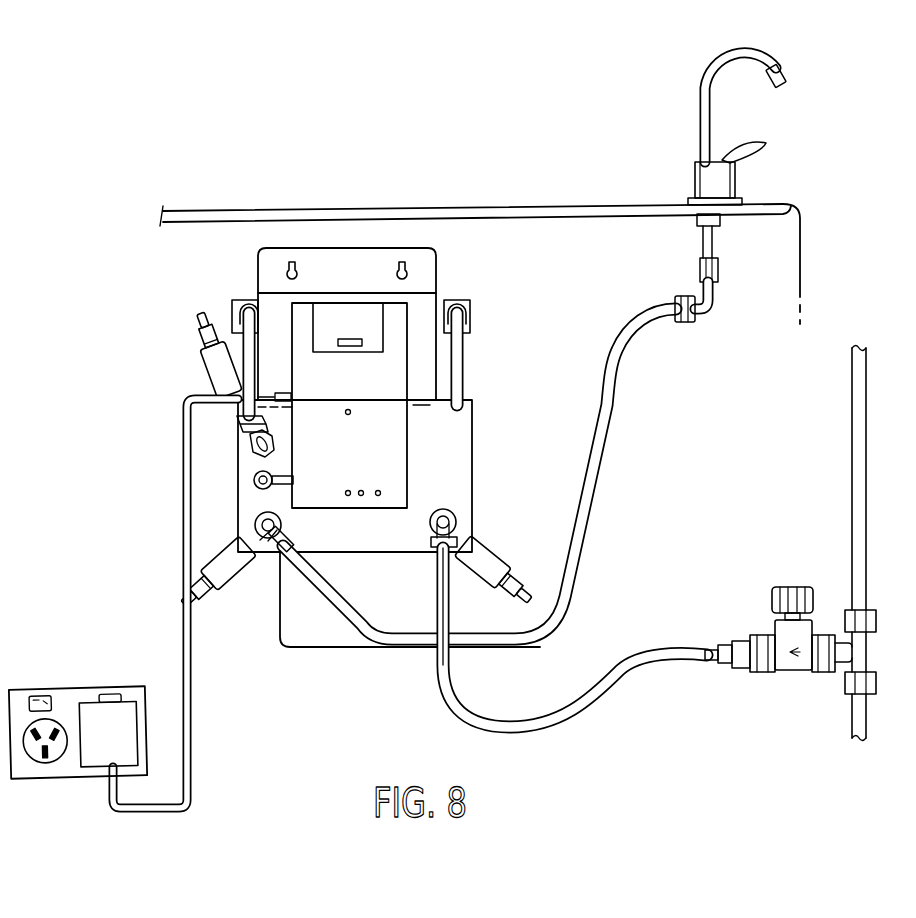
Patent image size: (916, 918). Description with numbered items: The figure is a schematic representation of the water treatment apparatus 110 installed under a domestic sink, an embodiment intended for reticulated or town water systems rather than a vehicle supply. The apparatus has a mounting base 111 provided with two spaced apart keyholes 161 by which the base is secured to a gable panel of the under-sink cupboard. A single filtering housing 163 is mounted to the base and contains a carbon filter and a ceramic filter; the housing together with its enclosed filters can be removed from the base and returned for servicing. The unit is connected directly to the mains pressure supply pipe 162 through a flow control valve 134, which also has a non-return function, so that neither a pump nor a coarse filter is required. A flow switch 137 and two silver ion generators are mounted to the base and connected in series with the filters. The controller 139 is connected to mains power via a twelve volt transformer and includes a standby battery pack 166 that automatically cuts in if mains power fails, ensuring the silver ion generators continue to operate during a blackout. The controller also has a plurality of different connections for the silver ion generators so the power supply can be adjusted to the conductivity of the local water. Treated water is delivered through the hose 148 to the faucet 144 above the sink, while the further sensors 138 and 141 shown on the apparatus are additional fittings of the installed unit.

The water treatment apparatus 110 is at (132, 449).
The mounting base 111 is at (278, 307).
The flow control valve 134 is at (767, 637).
The flow switch 137 is at (220, 372).
The sensor 138 is at (492, 553).
The controller 139 is at (307, 470).
The sensor 141 is at (210, 570).
The faucet 144 is at (718, 180).
The hose 148 is at (577, 512).
The keyholes 161 is at (398, 262).
The mains pressure supply pipe 162 is at (855, 475).
The filtering housing 163 is at (297, 633).
The standby battery pack 166 is at (373, 321).